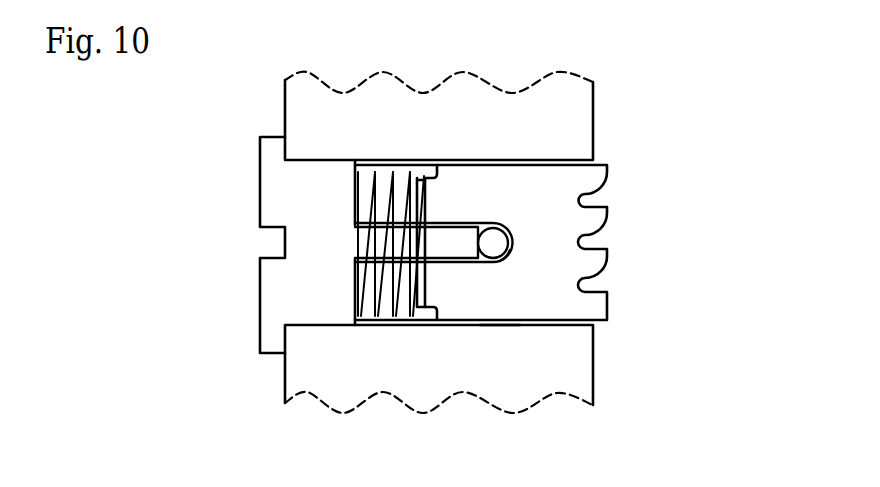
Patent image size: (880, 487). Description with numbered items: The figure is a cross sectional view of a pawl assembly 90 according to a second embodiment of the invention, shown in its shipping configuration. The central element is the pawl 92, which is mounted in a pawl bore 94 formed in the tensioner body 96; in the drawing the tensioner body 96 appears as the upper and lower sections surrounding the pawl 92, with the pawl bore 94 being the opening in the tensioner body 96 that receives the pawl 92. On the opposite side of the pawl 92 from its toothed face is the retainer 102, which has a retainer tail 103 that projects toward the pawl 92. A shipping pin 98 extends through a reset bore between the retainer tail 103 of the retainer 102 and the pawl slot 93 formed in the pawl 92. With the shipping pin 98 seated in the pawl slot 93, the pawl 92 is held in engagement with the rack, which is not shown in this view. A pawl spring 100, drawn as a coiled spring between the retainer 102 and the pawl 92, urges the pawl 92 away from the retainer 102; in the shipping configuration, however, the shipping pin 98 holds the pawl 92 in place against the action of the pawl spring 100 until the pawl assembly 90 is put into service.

The pawl assembly 90 is at (678, 73).
The pawl 92 is at (564, 269).
The pawl slot 93 is at (507, 263).
The pawl bore 94 is at (495, 325).
The tensioner body 96 is at (460, 142).
The shipping pin 98 is at (495, 243).
The pawl spring 100 is at (386, 295).
The retainer 102 is at (325, 306).
The retainer tail 103 is at (451, 245).